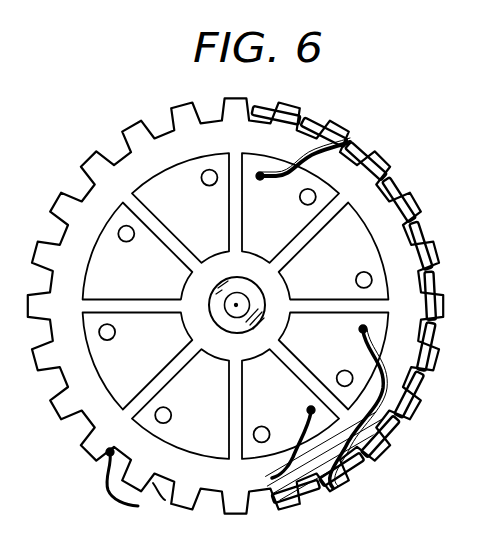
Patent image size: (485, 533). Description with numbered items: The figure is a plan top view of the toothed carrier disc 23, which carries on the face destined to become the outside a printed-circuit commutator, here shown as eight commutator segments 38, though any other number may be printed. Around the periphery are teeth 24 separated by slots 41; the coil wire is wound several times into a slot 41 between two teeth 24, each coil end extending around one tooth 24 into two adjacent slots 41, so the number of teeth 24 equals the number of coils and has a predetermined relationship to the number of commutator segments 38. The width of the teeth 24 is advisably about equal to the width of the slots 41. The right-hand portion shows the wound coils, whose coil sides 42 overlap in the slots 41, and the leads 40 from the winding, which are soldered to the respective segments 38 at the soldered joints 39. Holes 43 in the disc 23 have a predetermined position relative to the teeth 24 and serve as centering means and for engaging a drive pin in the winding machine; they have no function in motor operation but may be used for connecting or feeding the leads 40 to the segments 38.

The carrier disc 23 is at (100, 420).
The teeth 24 is at (63, 203).
The commutator segments 38 is at (99, 282).
The soldered joints 39 is at (362, 327).
The leads 40 is at (373, 368).
The slots 41 is at (203, 517).
The coil sides 42 is at (400, 183).
The holes 43 is at (135, 230).